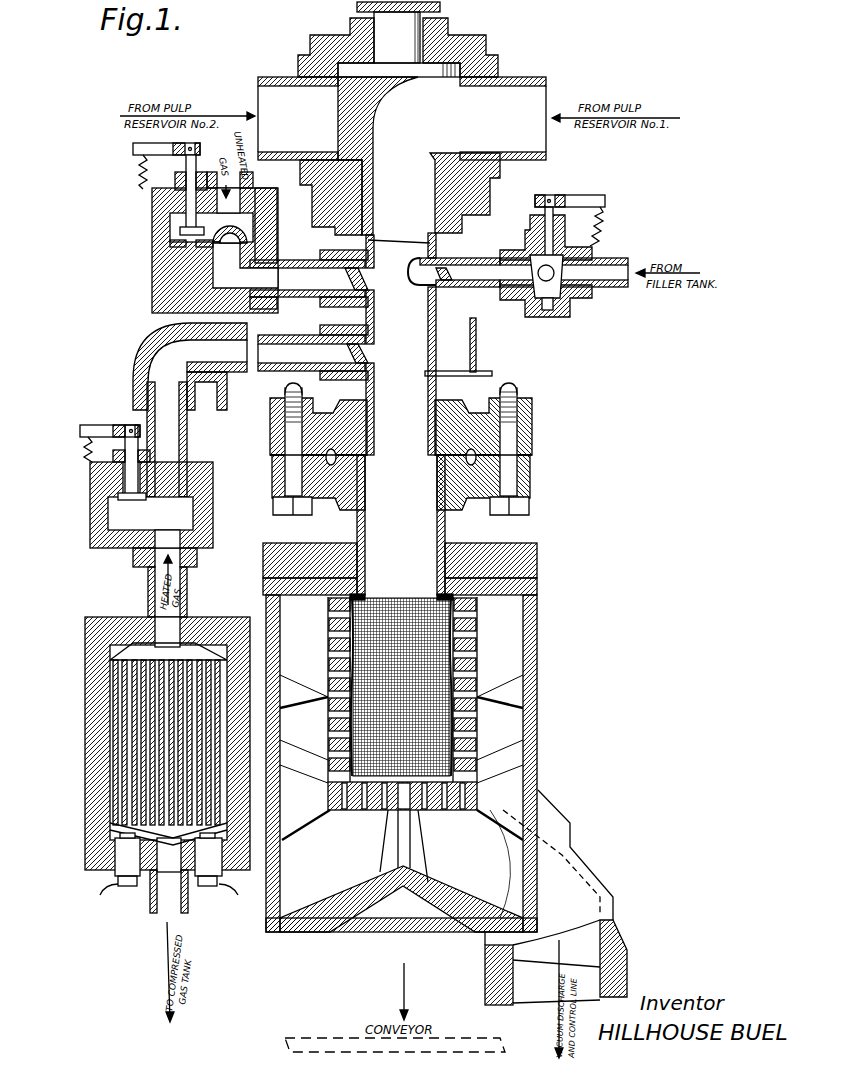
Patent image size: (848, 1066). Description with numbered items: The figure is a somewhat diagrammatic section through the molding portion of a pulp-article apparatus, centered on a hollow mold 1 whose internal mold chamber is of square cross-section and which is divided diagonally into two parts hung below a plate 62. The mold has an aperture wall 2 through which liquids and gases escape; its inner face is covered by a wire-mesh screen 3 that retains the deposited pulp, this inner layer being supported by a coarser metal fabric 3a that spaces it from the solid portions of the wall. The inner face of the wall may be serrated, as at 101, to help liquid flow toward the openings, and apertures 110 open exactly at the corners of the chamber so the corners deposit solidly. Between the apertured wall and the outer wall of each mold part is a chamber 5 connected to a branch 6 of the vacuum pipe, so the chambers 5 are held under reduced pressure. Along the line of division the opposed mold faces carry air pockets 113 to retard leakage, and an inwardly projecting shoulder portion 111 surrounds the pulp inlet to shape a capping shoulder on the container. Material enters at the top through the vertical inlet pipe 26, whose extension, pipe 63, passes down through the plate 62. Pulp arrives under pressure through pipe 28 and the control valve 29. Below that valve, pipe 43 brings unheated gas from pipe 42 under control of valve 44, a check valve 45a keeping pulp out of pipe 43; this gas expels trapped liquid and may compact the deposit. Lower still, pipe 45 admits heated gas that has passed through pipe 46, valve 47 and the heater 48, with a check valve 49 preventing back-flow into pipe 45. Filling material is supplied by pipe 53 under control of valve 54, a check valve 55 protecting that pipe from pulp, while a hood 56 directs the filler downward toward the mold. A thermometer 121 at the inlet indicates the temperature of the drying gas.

The hollow mold 1 is at (538, 660).
The aperture wall 2 is at (455, 625).
The screen 3 is at (460, 648).
The metal fabric 3a is at (470, 770).
The chamber 5 is at (292, 633).
The branch 6 is at (628, 978).
The pipe 26 is at (437, 353).
The pipe 28 is at (546, 78).
The control valve 29 is at (418, 76).
The pipe 42 is at (212, 146).
The pipe 43 is at (303, 262).
The valve 44 is at (185, 232).
The pipe 45 is at (302, 337).
The check valve 45a is at (362, 282).
The pipe 46 is at (190, 902).
The valve 47 is at (160, 517).
The heater 48 is at (88, 780).
The check valve 49 is at (364, 356).
The pipe 53 is at (612, 288).
The valve 54 is at (583, 253).
The check valve 55 is at (440, 272).
The hood 56 is at (421, 253).
The plate 62 is at (538, 560).
The pipe 63 is at (455, 530).
The serrations 101 is at (477, 720).
The apertures 110 is at (463, 810).
The shoulder portion 111 is at (268, 610).
The air pockets 113 is at (336, 580).
The thermometer 121 is at (477, 372).